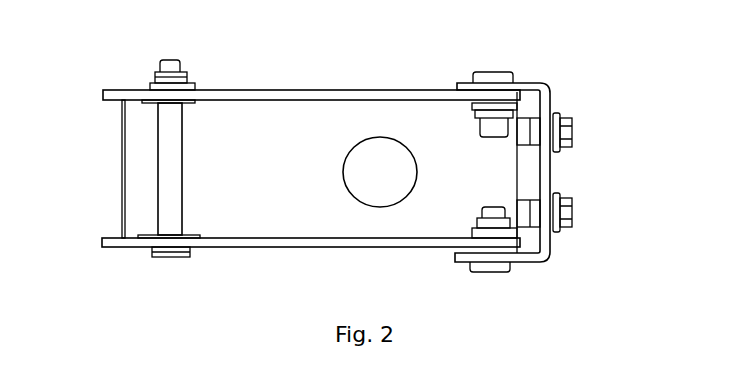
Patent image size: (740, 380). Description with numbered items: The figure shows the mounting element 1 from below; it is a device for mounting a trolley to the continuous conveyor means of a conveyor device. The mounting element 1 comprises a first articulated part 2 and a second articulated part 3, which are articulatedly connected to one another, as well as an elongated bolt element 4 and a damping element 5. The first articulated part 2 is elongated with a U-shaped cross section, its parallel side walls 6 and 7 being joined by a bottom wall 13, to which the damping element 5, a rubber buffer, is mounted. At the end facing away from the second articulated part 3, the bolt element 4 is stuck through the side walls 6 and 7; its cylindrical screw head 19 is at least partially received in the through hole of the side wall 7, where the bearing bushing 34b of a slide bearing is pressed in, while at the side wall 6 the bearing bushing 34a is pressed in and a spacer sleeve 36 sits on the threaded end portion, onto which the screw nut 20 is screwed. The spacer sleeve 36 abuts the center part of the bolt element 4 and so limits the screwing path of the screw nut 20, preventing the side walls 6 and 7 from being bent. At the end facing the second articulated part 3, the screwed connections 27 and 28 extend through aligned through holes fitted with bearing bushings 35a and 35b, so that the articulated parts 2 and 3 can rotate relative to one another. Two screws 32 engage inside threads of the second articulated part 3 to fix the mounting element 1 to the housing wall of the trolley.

The mounting element 1 is at (289, 50).
The first articulated part 2 is at (110, 90).
The second articulated part 3 is at (545, 83).
The bolt element 4 is at (182, 155).
The damping element 5 is at (368, 138).
The side wall 6 is at (237, 101).
The side wall 7 is at (231, 238).
The bottom wall 13 is at (311, 178).
The screw head 19 is at (183, 257).
The screw nut 20 is at (184, 81).
The screwed connection 27 is at (473, 115).
The screwed connection 28 is at (475, 226).
The screws 32 is at (574, 130).
The bearing bushing 34a is at (188, 90).
The bearing bushing 34b is at (150, 254).
The bearing bushing 35a is at (522, 68).
The bearing bushing 35b is at (508, 267).
The spacer sleeve 36 is at (152, 84).